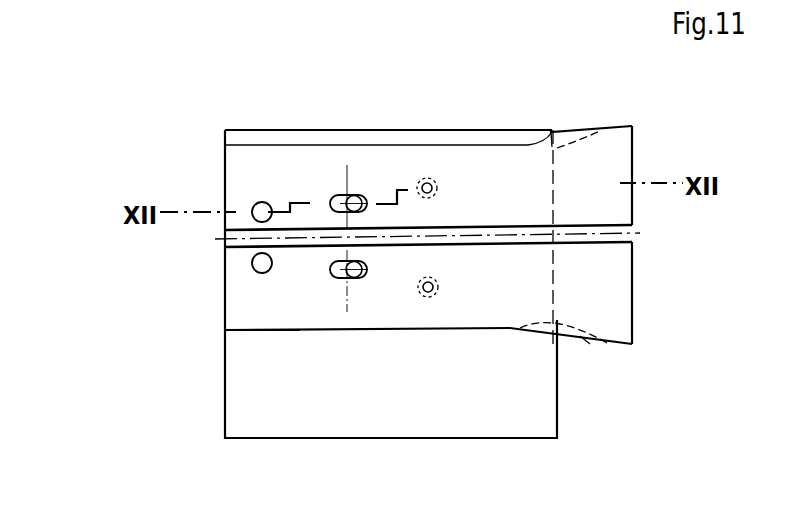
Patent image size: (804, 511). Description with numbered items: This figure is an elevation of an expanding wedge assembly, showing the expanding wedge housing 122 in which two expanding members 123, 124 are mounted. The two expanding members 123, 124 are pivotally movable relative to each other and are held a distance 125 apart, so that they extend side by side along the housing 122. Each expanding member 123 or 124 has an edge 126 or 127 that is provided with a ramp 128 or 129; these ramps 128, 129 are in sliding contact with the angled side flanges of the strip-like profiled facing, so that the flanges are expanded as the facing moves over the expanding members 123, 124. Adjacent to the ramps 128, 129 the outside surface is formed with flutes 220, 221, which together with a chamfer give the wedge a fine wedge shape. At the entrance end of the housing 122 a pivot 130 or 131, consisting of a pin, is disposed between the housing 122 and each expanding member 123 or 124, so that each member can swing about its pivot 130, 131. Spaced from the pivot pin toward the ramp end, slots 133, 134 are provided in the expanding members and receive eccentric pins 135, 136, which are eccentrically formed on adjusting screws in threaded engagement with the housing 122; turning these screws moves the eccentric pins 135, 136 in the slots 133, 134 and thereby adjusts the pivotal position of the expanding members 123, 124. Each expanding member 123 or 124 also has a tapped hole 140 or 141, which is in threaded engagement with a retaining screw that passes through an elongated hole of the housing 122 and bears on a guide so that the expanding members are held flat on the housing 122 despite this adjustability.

The expanding wedge housing 122 is at (541, 401).
The expanding member 123 is at (617, 147).
The expanding member 124 is at (620, 303).
The distance 125 is at (625, 237).
The edge 126 is at (248, 143).
The edge 127 is at (248, 332).
The ramp 128 is at (581, 132).
The ramp 129 is at (578, 340).
The pivot 130 is at (252, 268).
The pivot 131 is at (255, 208).
The slot 133 is at (337, 197).
The slot 134 is at (336, 279).
The eccentric pin 135 is at (357, 196).
The eccentric pin 136 is at (364, 279).
The tapped hole 140 is at (437, 184).
The tapped hole 141 is at (437, 283).
The flute 220 is at (567, 140).
The flute 221 is at (586, 336).